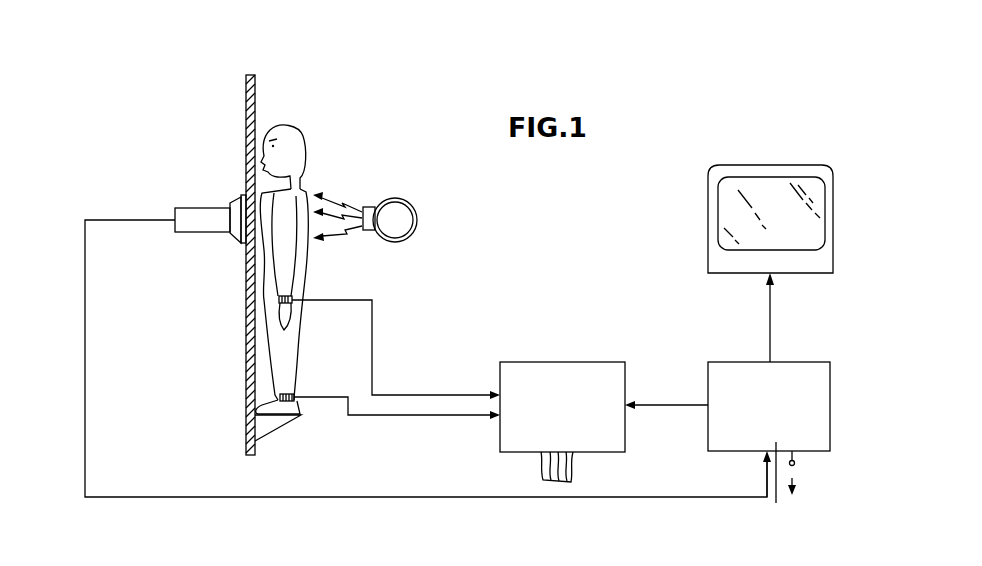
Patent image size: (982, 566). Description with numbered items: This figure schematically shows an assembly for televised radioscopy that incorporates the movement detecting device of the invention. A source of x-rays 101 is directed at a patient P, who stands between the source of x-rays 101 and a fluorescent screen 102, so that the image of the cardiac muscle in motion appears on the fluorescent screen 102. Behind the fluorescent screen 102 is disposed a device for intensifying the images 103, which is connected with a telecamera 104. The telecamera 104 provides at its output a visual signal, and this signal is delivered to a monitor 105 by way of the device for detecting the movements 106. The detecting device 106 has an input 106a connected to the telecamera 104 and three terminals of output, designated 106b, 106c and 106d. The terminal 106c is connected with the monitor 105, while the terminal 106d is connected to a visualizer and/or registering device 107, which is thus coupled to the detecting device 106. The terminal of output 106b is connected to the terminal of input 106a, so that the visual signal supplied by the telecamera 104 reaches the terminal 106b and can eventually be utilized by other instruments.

The patient P is at (312, 131).
The source of x-rays 101 is at (396, 205).
The fluorescent screen 102 is at (241, 198).
The device for intensifying the images 103 is at (236, 236).
The telecamera 104 is at (186, 213).
The monitor 105 is at (733, 215).
The device for detecting the movements 106 is at (728, 426).
The input 106a is at (762, 452).
The terminal of output 106b is at (794, 465).
The terminal of output 106c is at (773, 362).
The terminal of output 106d is at (708, 405).
The visualizer and/or registering device 107 is at (563, 378).